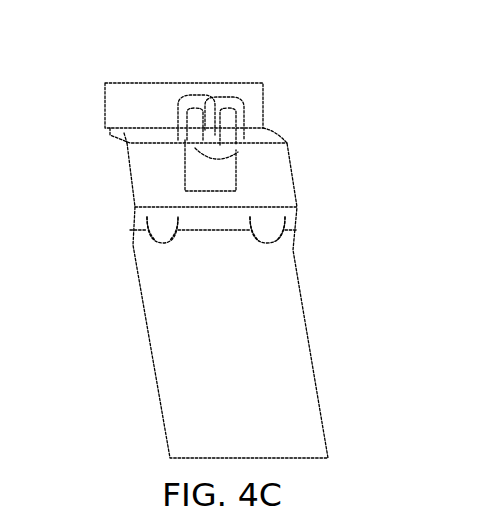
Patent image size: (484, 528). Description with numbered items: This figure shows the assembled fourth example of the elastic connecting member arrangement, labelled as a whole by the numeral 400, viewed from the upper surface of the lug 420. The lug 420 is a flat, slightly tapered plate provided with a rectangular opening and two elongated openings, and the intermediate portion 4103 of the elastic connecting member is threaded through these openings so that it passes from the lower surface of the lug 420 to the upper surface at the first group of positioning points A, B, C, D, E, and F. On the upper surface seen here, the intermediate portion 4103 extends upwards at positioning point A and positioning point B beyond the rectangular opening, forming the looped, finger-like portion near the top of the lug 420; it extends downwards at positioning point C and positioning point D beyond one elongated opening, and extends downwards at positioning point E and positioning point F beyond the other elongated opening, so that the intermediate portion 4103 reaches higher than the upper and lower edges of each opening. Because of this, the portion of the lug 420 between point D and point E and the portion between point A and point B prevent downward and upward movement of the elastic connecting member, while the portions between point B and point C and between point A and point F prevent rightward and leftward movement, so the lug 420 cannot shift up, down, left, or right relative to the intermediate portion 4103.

The device 400 is at (345, 53).
The lug 420 is at (172, 313).
The intermediate portion 4103 is at (153, 225).
The positioning point A is at (169, 140).
The positioning point B is at (237, 142).
The positioning point C is at (295, 224).
The positioning point D is at (258, 230).
The positioning point E is at (163, 235).
The positioning point F is at (140, 223).